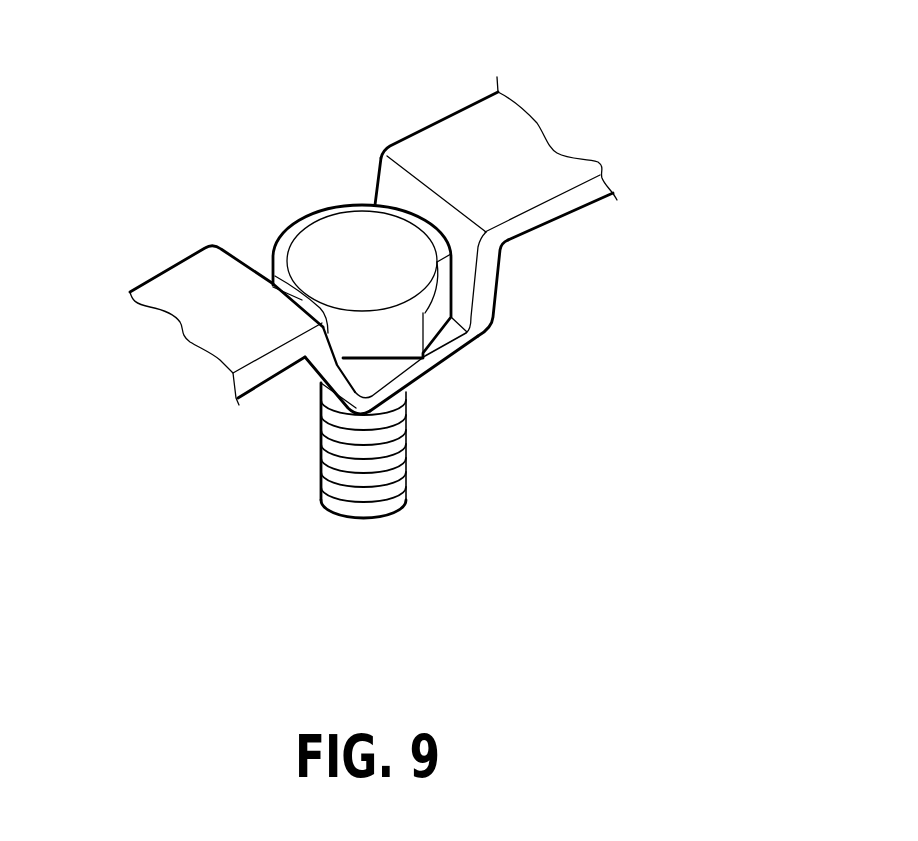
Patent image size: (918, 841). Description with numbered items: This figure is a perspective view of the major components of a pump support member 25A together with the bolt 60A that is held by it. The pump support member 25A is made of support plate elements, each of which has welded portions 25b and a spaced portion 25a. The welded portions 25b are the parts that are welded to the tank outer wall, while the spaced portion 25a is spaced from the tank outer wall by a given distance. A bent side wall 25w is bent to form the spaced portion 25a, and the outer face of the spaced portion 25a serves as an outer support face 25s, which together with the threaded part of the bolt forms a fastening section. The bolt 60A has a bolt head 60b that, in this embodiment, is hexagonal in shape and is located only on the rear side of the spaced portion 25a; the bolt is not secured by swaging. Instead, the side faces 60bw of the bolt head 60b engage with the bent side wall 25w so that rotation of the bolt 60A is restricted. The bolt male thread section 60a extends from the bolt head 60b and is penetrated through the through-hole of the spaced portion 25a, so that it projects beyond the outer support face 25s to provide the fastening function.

The pump support member 25A is at (392, 269).
The welded portion 25b is at (548, 207).
The bent side wall 25w is at (350, 315).
The spaced portion 25a is at (460, 352).
The outer support face 25s is at (430, 387).
The bolt 60A is at (355, 368).
The bolt head 60b is at (315, 233).
The side faces 60bw is at (455, 290).
The bolt male thread section 60a is at (407, 468).